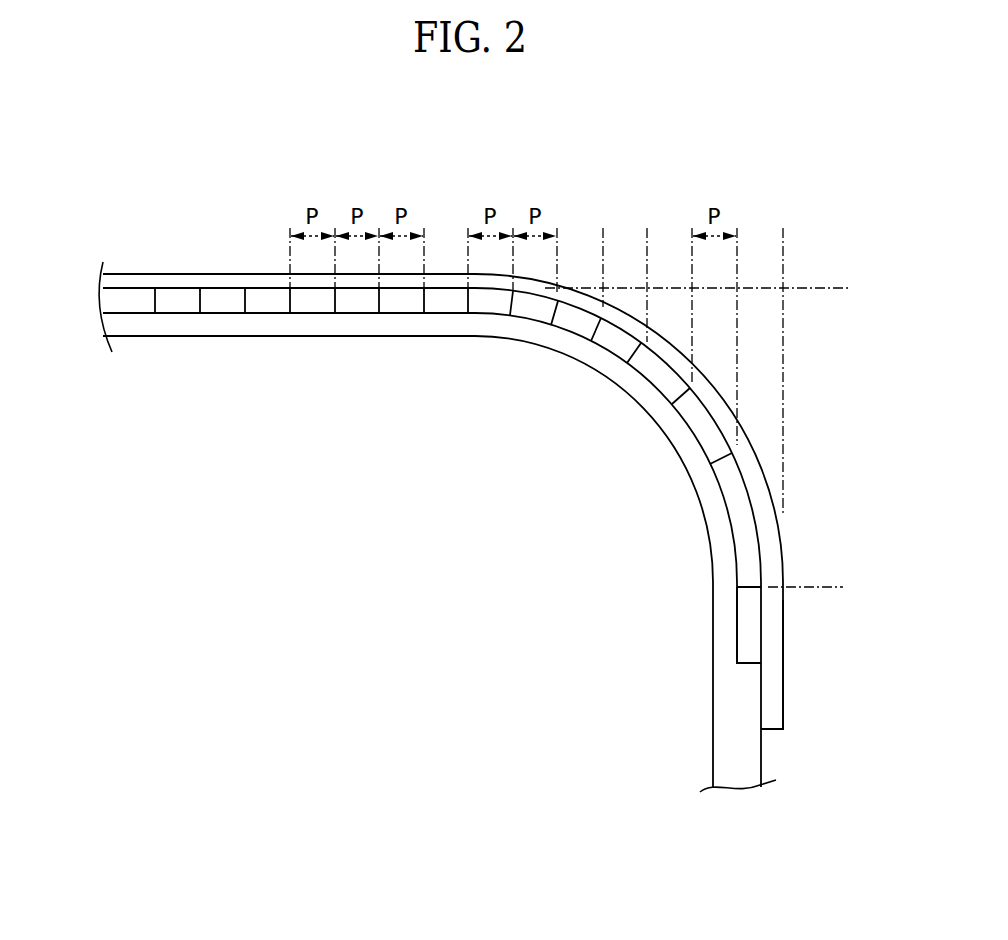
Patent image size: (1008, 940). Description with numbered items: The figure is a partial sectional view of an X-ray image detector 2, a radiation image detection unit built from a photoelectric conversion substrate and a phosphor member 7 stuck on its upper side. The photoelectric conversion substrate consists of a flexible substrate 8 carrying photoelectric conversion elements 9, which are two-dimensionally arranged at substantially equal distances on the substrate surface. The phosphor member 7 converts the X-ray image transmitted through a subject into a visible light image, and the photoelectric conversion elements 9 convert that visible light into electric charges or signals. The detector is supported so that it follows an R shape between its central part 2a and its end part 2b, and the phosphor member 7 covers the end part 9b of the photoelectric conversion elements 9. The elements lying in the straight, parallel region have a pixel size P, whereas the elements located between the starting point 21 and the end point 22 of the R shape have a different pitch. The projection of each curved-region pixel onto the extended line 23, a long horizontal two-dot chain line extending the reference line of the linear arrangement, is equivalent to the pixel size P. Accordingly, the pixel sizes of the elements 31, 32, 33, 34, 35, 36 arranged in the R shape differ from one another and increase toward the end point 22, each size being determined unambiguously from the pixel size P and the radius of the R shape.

The X-ray image detector 2 is at (472, 486).
The central part 2a is at (151, 270).
The end part 2b is at (787, 693).
The phosphor member 7 is at (214, 283).
The flexible substrate 8 is at (242, 322).
The photoelectric conversion elements 9 is at (378, 314).
The end part of photoelectric conversion elements 9b is at (748, 662).
The starting point 21 is at (464, 272).
The end point 22 is at (771, 590).
The extended line 23 is at (818, 294).
The element 31 is at (486, 305).
The element 32 is at (540, 316).
The element 33 is at (578, 330).
The element 34 is at (608, 345).
The element 35 is at (670, 382).
The element 36 is at (716, 447).